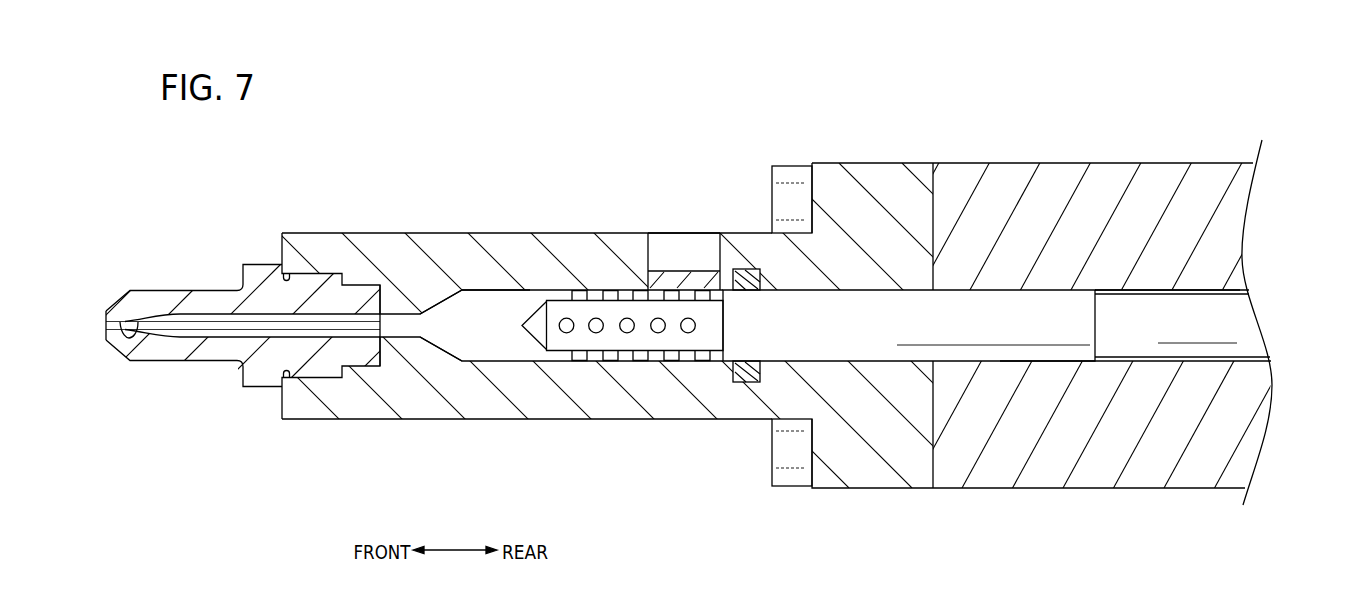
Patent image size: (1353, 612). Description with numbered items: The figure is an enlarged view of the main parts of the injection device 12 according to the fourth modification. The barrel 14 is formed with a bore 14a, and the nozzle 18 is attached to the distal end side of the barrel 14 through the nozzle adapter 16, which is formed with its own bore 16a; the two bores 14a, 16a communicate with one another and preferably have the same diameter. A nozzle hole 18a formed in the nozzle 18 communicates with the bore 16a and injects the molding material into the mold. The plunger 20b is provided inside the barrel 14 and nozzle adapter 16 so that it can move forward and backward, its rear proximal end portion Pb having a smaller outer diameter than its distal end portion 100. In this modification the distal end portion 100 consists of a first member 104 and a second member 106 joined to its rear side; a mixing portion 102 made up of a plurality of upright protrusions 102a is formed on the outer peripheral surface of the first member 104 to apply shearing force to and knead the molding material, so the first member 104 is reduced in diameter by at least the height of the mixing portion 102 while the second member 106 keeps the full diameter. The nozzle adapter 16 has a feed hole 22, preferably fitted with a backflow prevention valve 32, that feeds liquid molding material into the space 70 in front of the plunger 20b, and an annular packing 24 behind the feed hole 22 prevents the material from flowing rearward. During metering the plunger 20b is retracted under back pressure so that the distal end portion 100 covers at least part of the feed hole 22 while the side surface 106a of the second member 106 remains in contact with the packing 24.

The injection device 12 is at (705, 135).
The barrel 14 is at (1006, 180).
The bore 14a is at (1138, 290).
The nozzle adapter 16 is at (438, 245).
The bore 16a is at (490, 290).
The nozzle 18 is at (161, 300).
The nozzle hole 18a is at (118, 322).
The plunger 20b is at (1217, 313).
The feed hole 22 is at (650, 248).
The packing 24 is at (738, 268).
The backflow prevention valve 32 is at (697, 280).
The space 70 is at (490, 338).
The distal end portion 100 is at (785, 530).
The mixing portion 102 is at (578, 334).
The protrusions 102a is at (634, 361).
The first member 104 is at (707, 336).
The second member 106 is at (797, 337).
The side surface 106a is at (1046, 362).
The proximal end portion Pb is at (1242, 332).